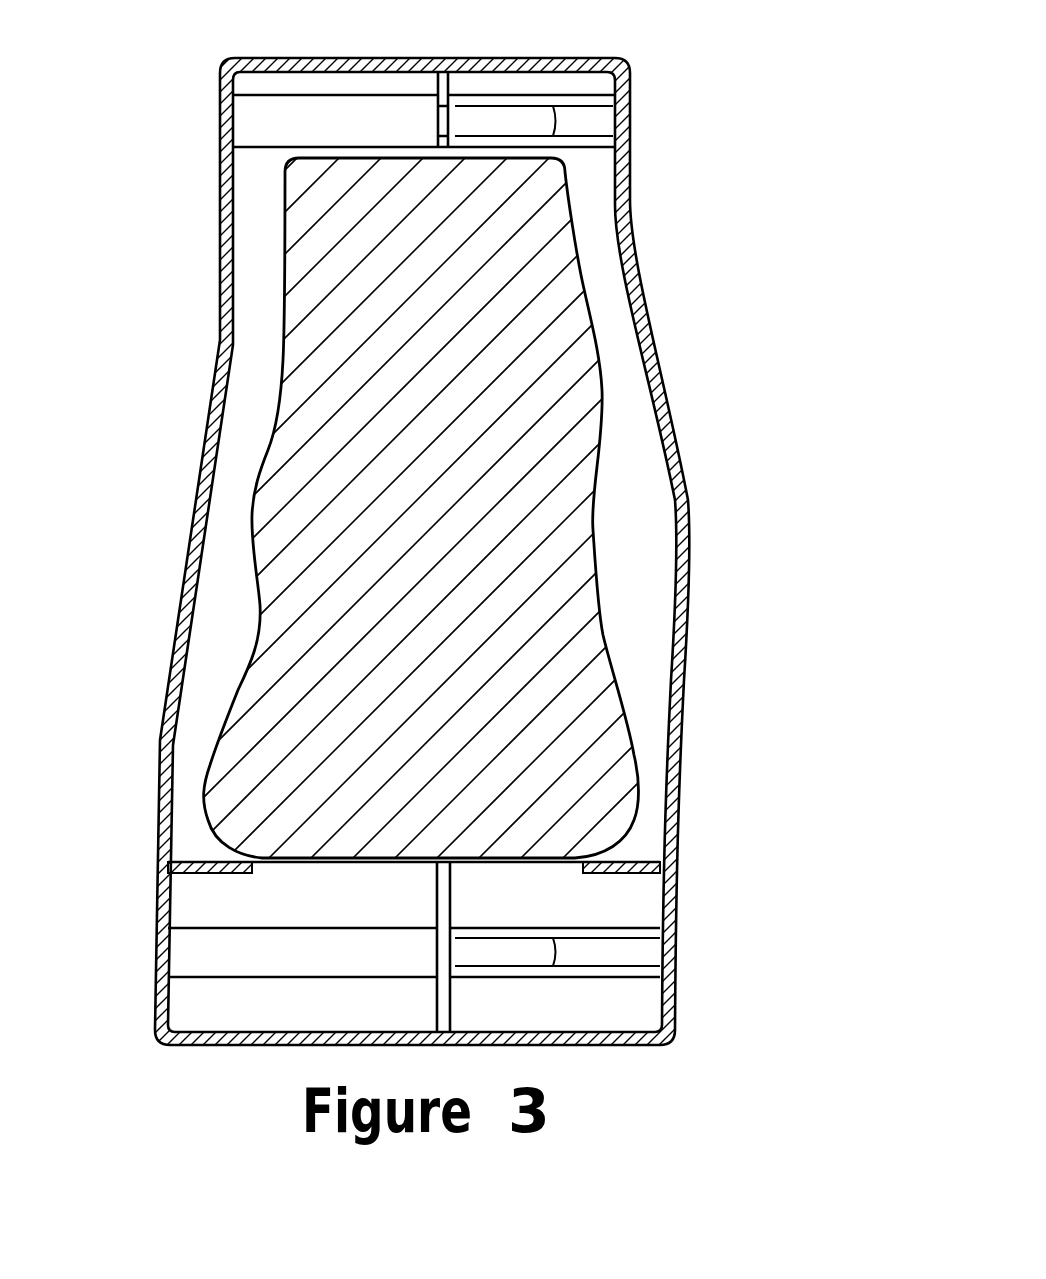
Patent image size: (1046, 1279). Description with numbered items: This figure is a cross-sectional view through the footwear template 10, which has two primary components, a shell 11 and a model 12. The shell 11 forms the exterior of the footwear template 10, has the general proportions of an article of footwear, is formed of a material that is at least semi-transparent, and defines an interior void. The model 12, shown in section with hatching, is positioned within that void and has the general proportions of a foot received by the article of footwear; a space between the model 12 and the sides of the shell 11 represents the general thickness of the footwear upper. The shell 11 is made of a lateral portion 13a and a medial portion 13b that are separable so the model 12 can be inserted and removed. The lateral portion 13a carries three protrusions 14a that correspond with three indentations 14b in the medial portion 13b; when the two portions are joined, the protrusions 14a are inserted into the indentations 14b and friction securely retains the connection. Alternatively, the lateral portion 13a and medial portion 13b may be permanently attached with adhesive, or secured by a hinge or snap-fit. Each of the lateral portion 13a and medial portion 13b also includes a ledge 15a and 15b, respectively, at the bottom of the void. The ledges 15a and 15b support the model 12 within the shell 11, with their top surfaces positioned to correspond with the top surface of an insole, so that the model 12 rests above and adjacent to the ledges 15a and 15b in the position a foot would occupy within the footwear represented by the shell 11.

The footwear template 10 is at (523, 524).
The shell 11 is at (427, 551).
The model 12 is at (245, 488).
The lateral portion 13a is at (181, 596).
The medial portion 13b is at (673, 423).
The protrusions 14a is at (512, 106).
The indentations 14b is at (592, 107).
The ledge 15a is at (197, 859).
The ledge 15b is at (648, 858).